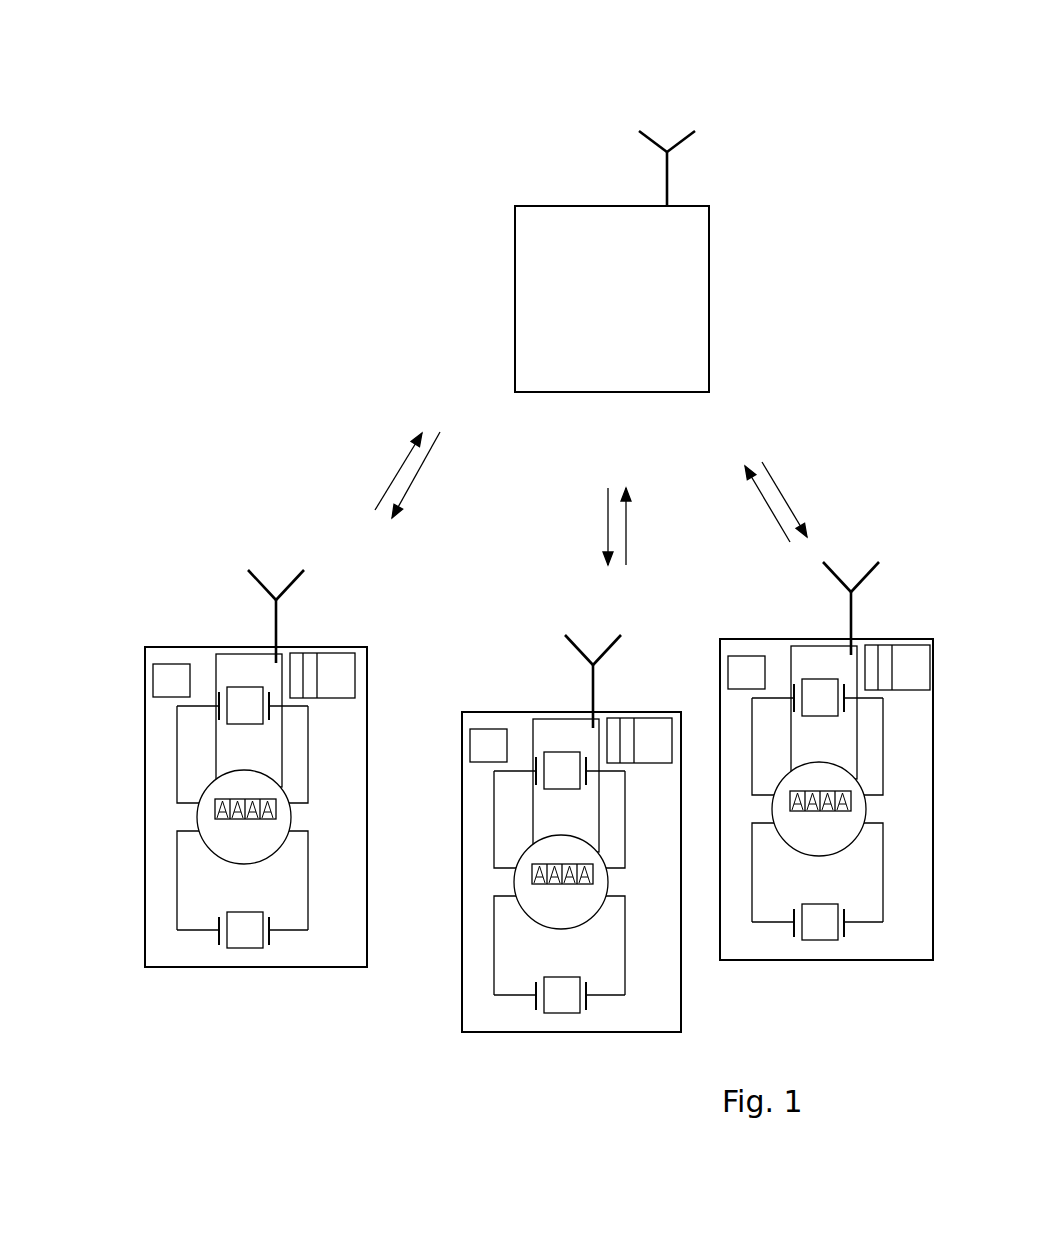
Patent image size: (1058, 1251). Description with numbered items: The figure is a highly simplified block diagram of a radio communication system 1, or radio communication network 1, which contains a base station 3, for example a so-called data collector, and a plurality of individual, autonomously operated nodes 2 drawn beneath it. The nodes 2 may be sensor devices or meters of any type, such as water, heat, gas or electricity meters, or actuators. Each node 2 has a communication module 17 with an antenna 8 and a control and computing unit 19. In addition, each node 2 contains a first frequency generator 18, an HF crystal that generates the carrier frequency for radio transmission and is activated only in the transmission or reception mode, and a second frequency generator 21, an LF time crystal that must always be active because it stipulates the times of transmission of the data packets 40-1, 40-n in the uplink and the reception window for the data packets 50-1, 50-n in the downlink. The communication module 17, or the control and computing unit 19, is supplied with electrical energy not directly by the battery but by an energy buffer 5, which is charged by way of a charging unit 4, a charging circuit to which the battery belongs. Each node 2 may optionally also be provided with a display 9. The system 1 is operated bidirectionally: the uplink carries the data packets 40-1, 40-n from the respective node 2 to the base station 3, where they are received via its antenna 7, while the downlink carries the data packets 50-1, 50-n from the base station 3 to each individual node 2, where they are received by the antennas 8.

The radio communication system 1 is at (528, 35).
The node 2 is at (239, 867).
The base station 3 is at (740, 273).
The charging unit 4 is at (322, 675).
The energy buffer 5 is at (310, 675).
The antenna 7 is at (669, 172).
The antenna 8 is at (276, 616).
The display 9 is at (244, 817).
The communication module 17 is at (322, 675).
The first frequency generator 18 is at (242, 705).
The control and computing unit 19 is at (171, 680).
The second frequency generator 21 is at (242, 930).
The data packet 40-1 is at (397, 478).
The data packet 40-n is at (705, 515).
The data packet 50-1 is at (416, 478).
The data packet 50-n is at (705, 513).